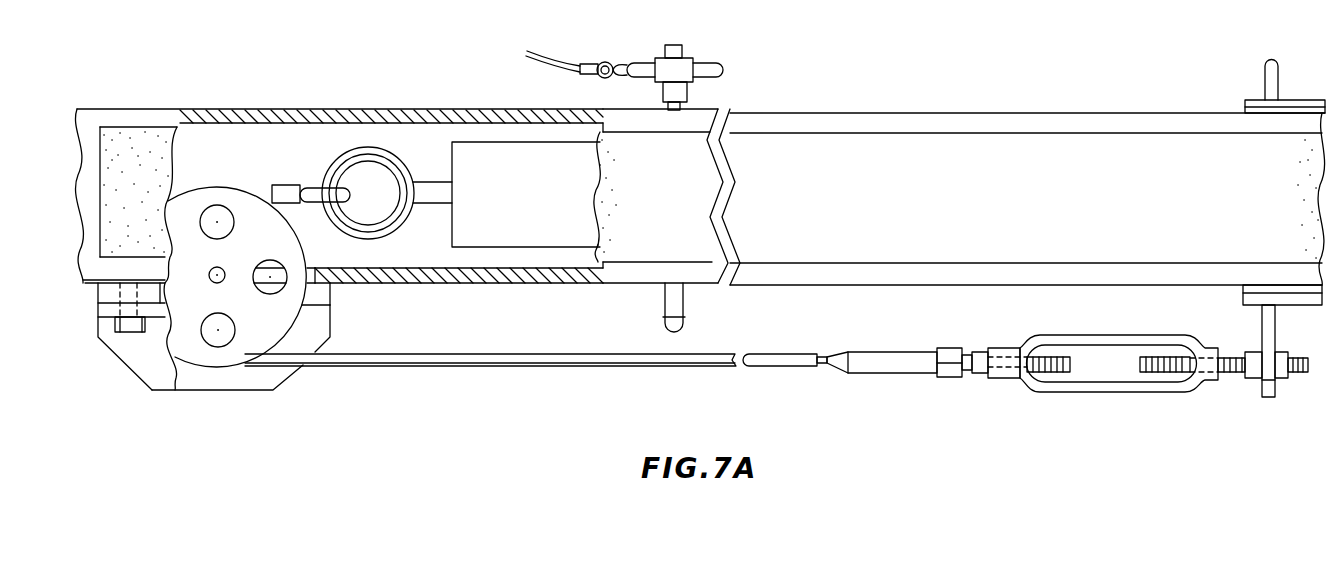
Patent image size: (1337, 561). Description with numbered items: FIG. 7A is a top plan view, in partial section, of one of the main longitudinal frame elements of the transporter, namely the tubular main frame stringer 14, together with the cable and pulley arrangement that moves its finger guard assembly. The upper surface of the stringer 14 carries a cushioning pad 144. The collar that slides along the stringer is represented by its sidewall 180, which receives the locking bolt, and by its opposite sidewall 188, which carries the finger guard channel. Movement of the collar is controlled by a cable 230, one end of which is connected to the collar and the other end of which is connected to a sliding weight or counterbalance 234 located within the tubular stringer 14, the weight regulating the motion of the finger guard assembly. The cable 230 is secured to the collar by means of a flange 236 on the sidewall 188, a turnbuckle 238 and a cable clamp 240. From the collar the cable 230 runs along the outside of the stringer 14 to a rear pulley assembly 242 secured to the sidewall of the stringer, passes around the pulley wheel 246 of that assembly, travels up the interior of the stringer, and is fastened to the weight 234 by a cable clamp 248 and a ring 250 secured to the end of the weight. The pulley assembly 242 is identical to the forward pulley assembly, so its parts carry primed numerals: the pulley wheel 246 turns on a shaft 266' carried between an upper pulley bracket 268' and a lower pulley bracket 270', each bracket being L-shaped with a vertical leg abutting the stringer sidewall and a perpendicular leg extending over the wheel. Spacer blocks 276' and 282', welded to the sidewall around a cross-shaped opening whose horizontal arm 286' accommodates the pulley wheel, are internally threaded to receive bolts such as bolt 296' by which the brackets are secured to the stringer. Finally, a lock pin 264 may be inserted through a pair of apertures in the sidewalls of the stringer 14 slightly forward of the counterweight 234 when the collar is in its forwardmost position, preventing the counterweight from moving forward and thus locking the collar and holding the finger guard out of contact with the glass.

The main frame stringer 14 is at (387, 112).
The cushioning pad 144 is at (958, 208).
The sidewall of the collar 180 is at (1250, 108).
The sidewall of the collar 188 is at (1260, 300).
The flange 236 is at (1270, 392).
The turnbuckle 238 is at (1102, 384).
The cable clamp 240 is at (883, 360).
The cable 230 is at (480, 358).
The sliding weight or counterbalance 234 is at (560, 203).
The ring 250 is at (402, 172).
The cable clamp 248 is at (285, 188).
The pulley wheel 246 is at (205, 197).
The shaft 266' is at (213, 263).
The horizontal arm of the cross-shaped opening 286' is at (329, 262).
The spacer block 276' is at (124, 272).
The spacer block 282' is at (342, 297).
The lower pulley bracket 270' is at (349, 328).
The bolt 296' is at (140, 342).
The upper pulley bracket 268' is at (131, 358).
The pulley assembly 242 is at (215, 390).
The lock pin 264 is at (705, 71).